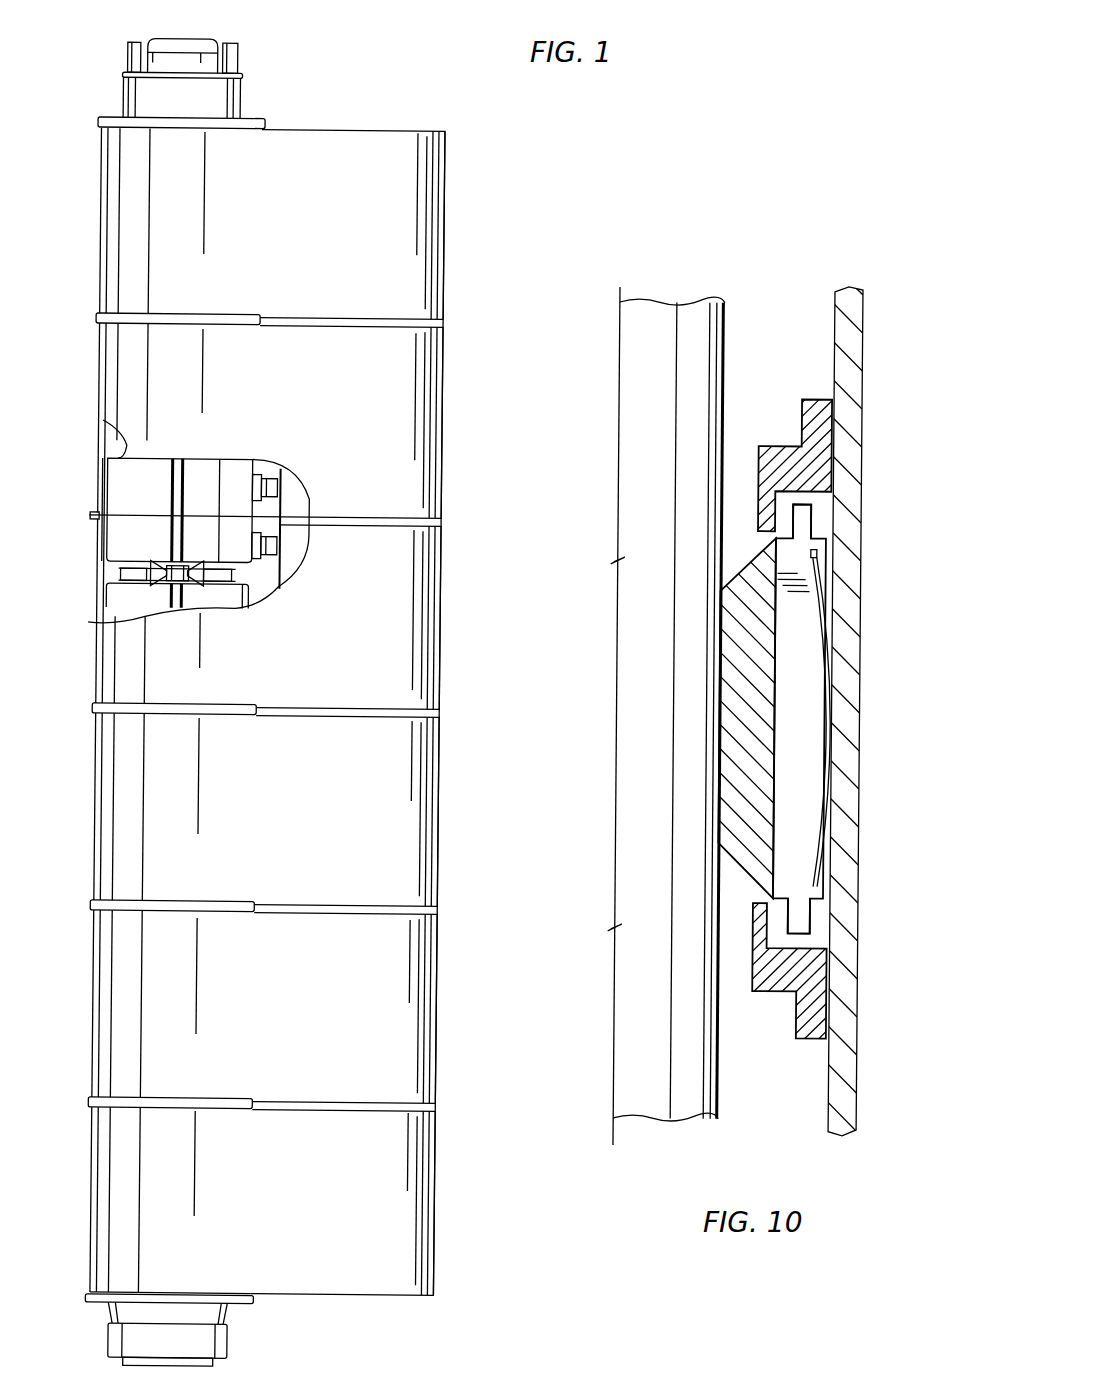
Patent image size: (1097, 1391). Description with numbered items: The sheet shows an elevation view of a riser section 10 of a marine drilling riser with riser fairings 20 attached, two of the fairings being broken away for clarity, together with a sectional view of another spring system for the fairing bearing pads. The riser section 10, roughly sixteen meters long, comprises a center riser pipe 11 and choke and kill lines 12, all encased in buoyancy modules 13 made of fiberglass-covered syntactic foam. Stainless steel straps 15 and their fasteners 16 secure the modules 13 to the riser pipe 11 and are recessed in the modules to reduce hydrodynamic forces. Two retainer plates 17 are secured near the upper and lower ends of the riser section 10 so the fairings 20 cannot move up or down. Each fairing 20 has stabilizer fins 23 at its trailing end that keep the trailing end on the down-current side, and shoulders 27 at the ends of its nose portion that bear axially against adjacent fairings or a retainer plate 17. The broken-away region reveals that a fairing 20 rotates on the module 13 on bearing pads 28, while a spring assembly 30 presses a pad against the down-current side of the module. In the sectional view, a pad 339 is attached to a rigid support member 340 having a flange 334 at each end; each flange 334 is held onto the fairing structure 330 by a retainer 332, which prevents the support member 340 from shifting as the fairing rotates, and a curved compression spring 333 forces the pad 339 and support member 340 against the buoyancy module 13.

In FIG. 1, the riser section 10 is at (108, 96).
In FIG. 1, the center riser pipe 11 is at (203, 61).
In FIG. 1, the choke and kill lines 12 is at (125, 50).
In FIG. 1, the buoyancy module 13 is at (130, 502).
In FIG. 10, the buoyancy module 13 is at (722, 345).
In FIG. 1, the stainless steel straps 15 is at (120, 572).
In FIG. 1, the fasteners 16 is at (150, 578).
In FIG. 1, the retainer plates 17 is at (248, 116).
In FIG. 1, the riser fairing 20 is at (420, 131).
In FIG. 1, the stabilizer fins 23 is at (440, 192).
In FIG. 1, the shoulders 27 is at (265, 124).
In FIG. 1, the bearing pads 28 is at (118, 437).
In FIG. 1, the spring assembly 30 is at (272, 488).
In FIG. 10, the fairing structure 330 is at (856, 346).
In FIG. 10, the retainer 332 is at (823, 453).
In FIG. 10, the curved compression spring 333 is at (828, 652).
In FIG. 10, the flange 334 is at (810, 515).
In FIG. 10, the bearing pad 339 is at (740, 696).
In FIG. 10, the rigid support member 340 is at (800, 553).